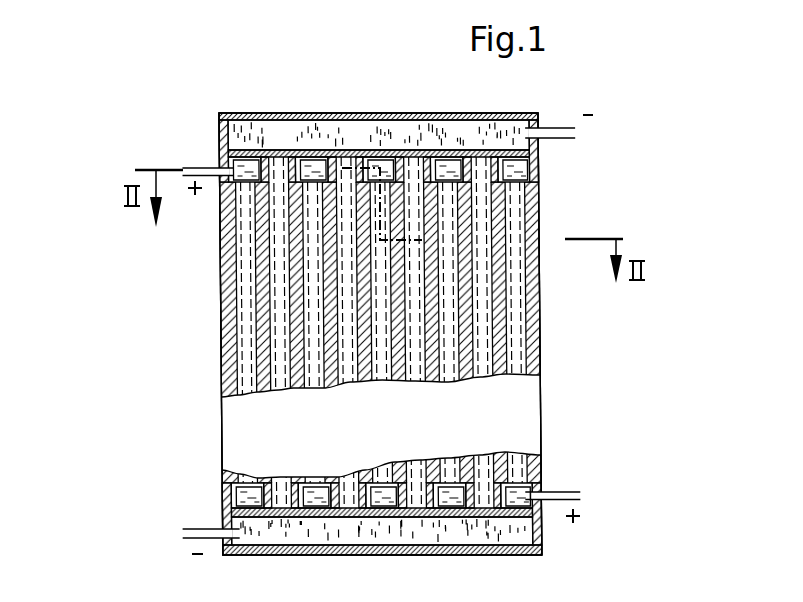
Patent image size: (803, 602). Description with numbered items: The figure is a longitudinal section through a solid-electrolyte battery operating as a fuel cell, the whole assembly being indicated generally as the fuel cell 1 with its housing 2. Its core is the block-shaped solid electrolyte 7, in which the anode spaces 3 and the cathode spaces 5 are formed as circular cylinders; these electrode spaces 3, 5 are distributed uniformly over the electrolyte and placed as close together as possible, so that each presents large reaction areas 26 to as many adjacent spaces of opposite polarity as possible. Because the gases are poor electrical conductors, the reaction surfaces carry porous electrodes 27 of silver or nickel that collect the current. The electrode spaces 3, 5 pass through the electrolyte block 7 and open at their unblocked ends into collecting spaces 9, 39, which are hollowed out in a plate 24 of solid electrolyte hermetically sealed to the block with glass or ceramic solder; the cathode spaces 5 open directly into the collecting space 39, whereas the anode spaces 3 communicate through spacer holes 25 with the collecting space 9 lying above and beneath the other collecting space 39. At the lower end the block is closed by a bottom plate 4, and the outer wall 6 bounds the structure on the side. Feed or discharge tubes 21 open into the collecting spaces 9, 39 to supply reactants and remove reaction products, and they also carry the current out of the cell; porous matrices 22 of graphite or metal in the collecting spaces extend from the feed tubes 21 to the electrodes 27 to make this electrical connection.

The electrolysis apparatus 1 is at (98, 279).
The housing 2 is at (291, 111).
The anode spaces 3 is at (482, 205).
The bottom plate 4 is at (413, 560).
The cathode spaces 5 is at (513, 263).
The right housing wall 6 is at (549, 377).
The solid electrolyte 7 is at (221, 362).
The collecting space 9 is at (239, 131).
The feed tubes 21 is at (558, 127).
The porous matrices 22 is at (330, 127).
The plate 24 is at (378, 113).
The spacer holes 25 is at (274, 166).
The reaction areas 26 is at (238, 327).
The electrodes 27 is at (525, 318).
The collecting space 39 is at (526, 167).